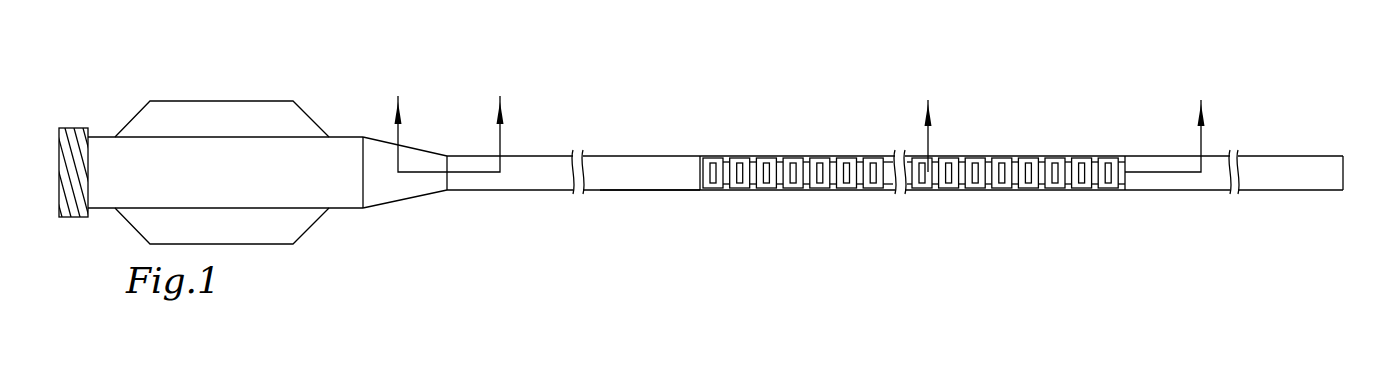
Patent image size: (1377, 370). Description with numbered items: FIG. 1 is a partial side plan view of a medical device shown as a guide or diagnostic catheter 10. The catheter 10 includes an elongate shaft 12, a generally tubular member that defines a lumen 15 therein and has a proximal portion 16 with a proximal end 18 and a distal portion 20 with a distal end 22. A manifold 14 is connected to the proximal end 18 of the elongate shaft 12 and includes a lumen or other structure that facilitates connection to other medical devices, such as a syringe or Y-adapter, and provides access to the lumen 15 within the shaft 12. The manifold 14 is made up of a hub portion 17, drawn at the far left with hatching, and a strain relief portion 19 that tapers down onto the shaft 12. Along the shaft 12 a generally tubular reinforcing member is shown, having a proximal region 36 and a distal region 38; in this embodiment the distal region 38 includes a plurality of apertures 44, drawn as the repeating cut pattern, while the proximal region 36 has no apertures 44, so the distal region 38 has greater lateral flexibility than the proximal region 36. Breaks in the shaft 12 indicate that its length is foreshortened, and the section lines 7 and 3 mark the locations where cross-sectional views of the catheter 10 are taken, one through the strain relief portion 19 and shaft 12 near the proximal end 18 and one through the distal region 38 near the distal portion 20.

The catheter 10 is at (716, 86).
The manifold 14 is at (216, 98).
The hub portion 17 is at (100, 220).
The strain relief portion 19 is at (392, 214).
The section line 7- 7 is at (449, 122).
The proximal end 18 is at (456, 190).
The elongate shaft 12 is at (632, 144).
The proximal portion 16 is at (562, 201).
The proximal region 36 is at (650, 201).
The distal region 38 is at (912, 218).
The apertures 44 is at (847, 177).
The section line 3- 3 is at (1064, 123).
The distal portion 20 is at (1172, 204).
The lumen 15 is at (1345, 168).
The distal end 22 is at (1343, 190).